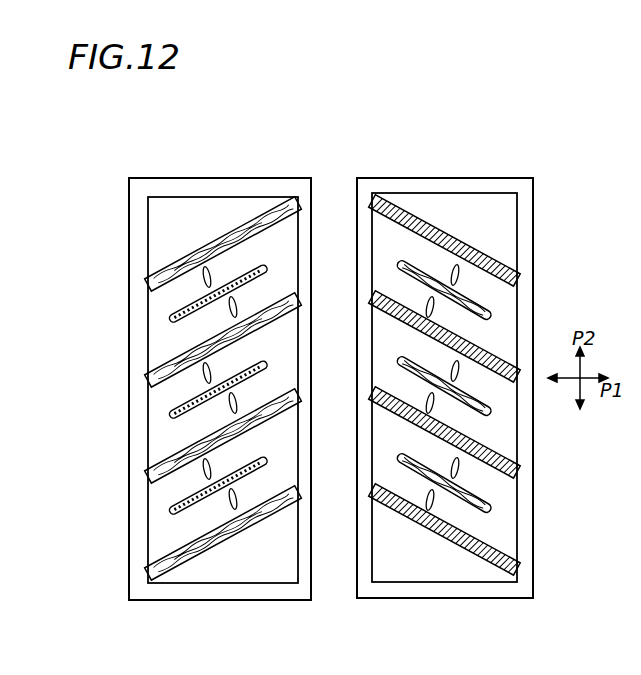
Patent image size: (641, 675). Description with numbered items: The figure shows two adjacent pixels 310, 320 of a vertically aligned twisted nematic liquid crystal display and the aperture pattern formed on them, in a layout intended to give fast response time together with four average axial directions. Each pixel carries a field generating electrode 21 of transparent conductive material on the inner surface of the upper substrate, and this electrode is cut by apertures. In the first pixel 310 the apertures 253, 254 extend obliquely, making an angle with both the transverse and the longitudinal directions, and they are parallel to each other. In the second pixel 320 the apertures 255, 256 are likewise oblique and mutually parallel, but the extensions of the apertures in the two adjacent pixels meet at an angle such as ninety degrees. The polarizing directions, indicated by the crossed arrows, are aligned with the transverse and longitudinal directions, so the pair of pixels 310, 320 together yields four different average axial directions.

The field generating electrode 21 is at (522, 233).
The aperture 253 is at (147, 475).
The aperture 254 is at (173, 512).
The aperture 255 is at (518, 472).
The aperture 256 is at (492, 508).
The pixel 310 is at (184, 423).
The pixel 320 is at (477, 423).